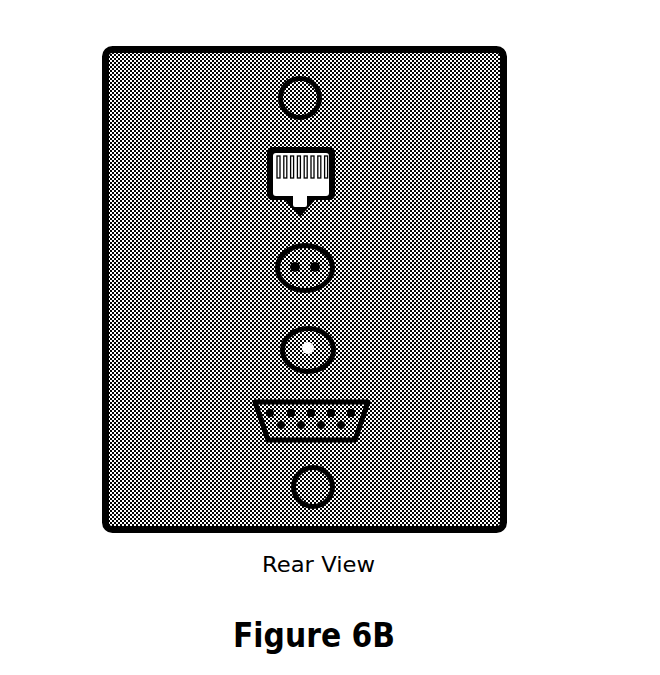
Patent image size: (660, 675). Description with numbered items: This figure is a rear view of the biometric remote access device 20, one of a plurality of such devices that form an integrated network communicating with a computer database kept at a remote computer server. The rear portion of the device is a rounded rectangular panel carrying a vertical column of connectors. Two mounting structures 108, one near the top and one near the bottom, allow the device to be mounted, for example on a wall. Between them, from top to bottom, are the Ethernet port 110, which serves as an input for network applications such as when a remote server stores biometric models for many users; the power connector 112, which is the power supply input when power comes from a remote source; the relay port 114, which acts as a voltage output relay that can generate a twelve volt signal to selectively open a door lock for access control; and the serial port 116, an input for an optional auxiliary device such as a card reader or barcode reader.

The remote access device 20 is at (305, 265).
The mounting structures 108 is at (323, 92).
The Ethernet port 110 is at (336, 163).
The power connector 112 is at (335, 262).
The relay port 114 is at (338, 348).
The serial port 116 is at (372, 413).